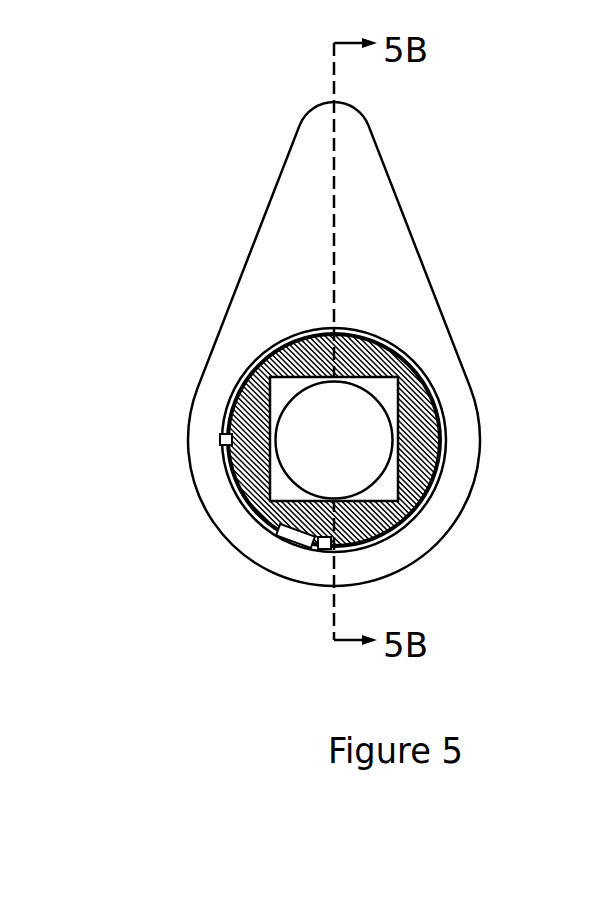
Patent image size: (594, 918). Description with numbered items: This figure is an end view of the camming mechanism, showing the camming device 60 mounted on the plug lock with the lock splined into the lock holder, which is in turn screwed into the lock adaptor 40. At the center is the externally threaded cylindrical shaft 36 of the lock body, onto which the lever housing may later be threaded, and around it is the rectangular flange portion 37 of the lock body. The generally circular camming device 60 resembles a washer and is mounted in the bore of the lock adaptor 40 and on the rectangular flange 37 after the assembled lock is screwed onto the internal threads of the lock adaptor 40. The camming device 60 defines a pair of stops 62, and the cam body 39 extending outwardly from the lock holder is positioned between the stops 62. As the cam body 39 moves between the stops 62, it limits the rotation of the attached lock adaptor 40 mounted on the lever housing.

The lock adaptor 40 is at (283, 227).
The rectangular flange portion 37 is at (282, 390).
The camming device 60 is at (434, 420).
The cylindrical shaft 36 is at (348, 442).
The stops 62 is at (231, 440).
The cam body 39 is at (284, 533).